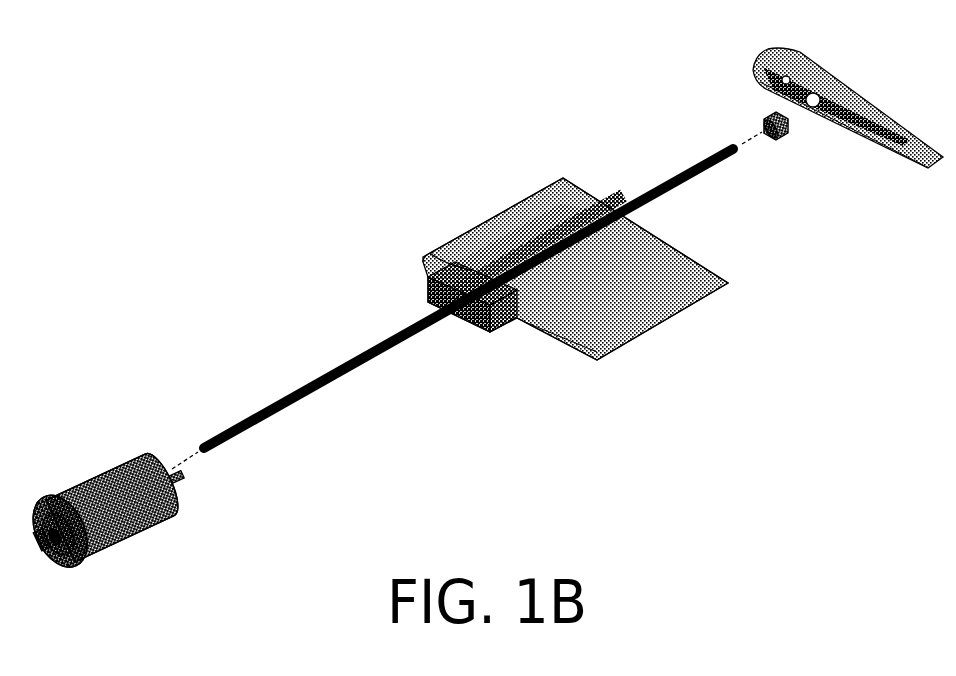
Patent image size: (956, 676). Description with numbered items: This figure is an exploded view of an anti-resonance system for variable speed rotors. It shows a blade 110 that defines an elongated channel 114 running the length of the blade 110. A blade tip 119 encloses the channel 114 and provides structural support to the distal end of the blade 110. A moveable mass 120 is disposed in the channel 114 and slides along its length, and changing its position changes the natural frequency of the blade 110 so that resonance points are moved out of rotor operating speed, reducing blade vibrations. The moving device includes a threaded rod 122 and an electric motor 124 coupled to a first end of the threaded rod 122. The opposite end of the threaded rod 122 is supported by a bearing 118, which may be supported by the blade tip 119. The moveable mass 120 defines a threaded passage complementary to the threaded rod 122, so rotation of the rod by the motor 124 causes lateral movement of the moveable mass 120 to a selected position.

The blade 110 is at (545, 188).
The elongated channel 114 is at (607, 186).
The bearing 118 is at (781, 132).
The blade tip 119 is at (813, 72).
The moveable mass 120 is at (428, 294).
The threaded rod 122 is at (697, 160).
The electric motor 124 is at (111, 483).